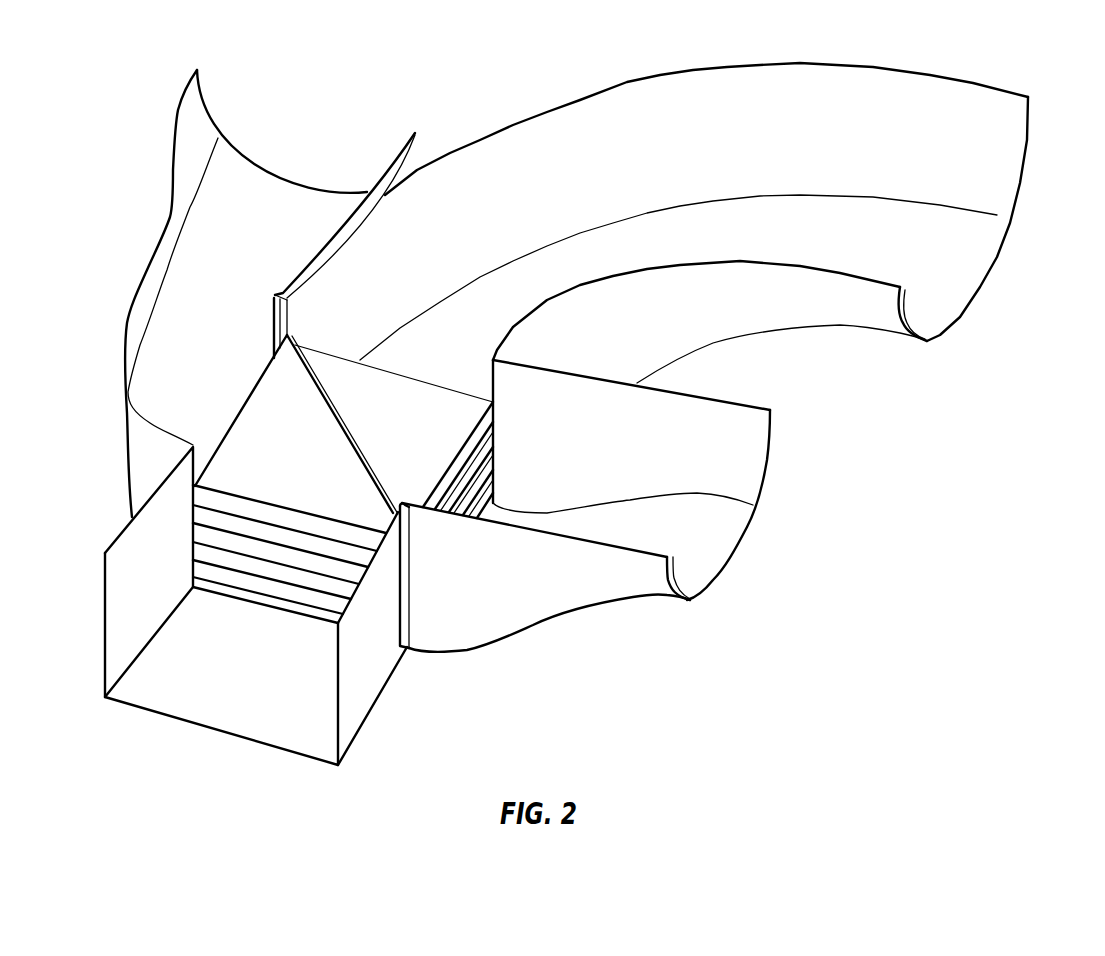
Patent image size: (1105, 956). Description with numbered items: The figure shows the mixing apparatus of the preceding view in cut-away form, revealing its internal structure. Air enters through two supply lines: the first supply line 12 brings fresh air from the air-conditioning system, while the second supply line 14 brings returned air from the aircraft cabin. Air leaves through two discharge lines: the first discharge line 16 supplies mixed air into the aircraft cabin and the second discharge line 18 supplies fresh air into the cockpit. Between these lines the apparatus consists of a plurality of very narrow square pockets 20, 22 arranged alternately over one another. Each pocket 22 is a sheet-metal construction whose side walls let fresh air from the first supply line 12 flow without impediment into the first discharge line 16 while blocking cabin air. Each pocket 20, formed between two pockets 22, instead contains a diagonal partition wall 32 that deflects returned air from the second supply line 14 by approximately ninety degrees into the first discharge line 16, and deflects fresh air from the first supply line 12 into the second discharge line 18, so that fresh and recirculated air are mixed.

The first supply line 12 is at (223, 722).
The second supply line 14 is at (693, 567).
The first discharge line 16 is at (950, 285).
The second discharge line 18 is at (272, 185).
The pocket 20 is at (257, 453).
The pocket 22 is at (247, 508).
The diagonal partition wall 32 is at (312, 403).